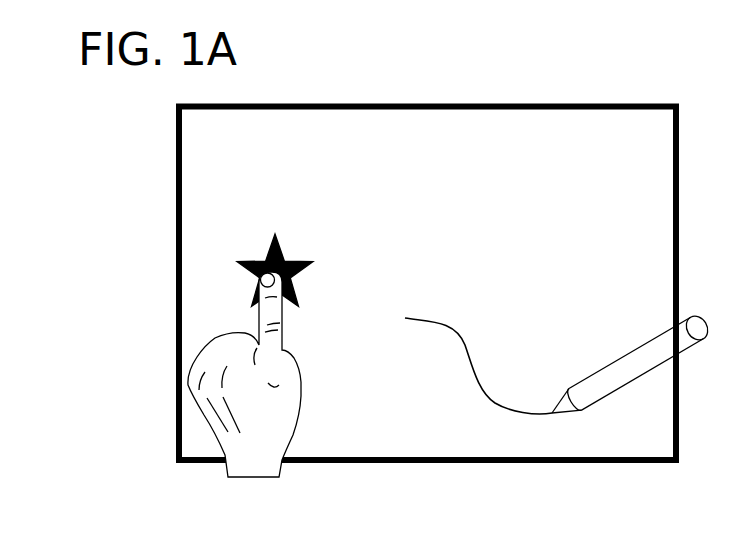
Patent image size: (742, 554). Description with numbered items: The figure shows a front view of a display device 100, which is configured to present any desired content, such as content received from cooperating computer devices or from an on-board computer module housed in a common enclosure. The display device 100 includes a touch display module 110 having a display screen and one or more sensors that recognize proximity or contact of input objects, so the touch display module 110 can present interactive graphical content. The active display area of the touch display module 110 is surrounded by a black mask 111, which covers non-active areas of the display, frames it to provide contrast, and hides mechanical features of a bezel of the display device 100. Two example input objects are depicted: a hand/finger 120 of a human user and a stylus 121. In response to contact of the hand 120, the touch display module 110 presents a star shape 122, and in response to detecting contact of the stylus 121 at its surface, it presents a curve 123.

The display device 100 is at (298, 96).
The touch display module 110 is at (453, 442).
The black mask 111 is at (585, 463).
The hand/finger 120 is at (258, 478).
The stylus 121 is at (697, 345).
The star shape 122 is at (302, 265).
The curve 123 is at (418, 317).